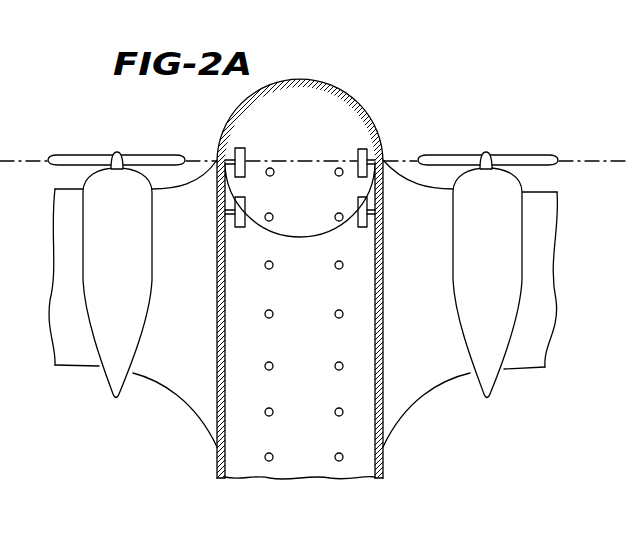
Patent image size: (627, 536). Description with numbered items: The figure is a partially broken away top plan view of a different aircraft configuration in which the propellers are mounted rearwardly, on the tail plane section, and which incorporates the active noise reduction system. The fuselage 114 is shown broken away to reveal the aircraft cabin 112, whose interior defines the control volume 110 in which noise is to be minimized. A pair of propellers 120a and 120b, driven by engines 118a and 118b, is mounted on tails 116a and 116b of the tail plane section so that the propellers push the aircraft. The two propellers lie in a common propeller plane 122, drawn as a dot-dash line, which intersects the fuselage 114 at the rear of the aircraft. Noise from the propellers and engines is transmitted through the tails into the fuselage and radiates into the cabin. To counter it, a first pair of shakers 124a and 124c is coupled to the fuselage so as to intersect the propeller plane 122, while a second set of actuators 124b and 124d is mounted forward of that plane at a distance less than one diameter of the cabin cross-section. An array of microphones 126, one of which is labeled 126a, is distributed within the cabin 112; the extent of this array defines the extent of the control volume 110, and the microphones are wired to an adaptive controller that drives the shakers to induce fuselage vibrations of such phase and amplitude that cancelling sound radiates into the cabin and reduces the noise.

The control volume 110 is at (284, 296).
The aircraft cabin 112 is at (250, 463).
The fuselage 114 is at (245, 100).
The tail 116a is at (532, 369).
The tail 116b is at (190, 401).
The engine 118a is at (490, 390).
The engine 118b is at (103, 386).
The propeller 120a is at (458, 156).
The propeller 120b is at (82, 155).
The propeller plane 122 is at (586, 162).
The shaker 124a is at (359, 149).
The actuator 124b is at (362, 228).
The shaker 124c is at (245, 147).
The actuator 124d is at (241, 228).
The microphones 126 is at (272, 362).
The microphone 126a is at (271, 177).